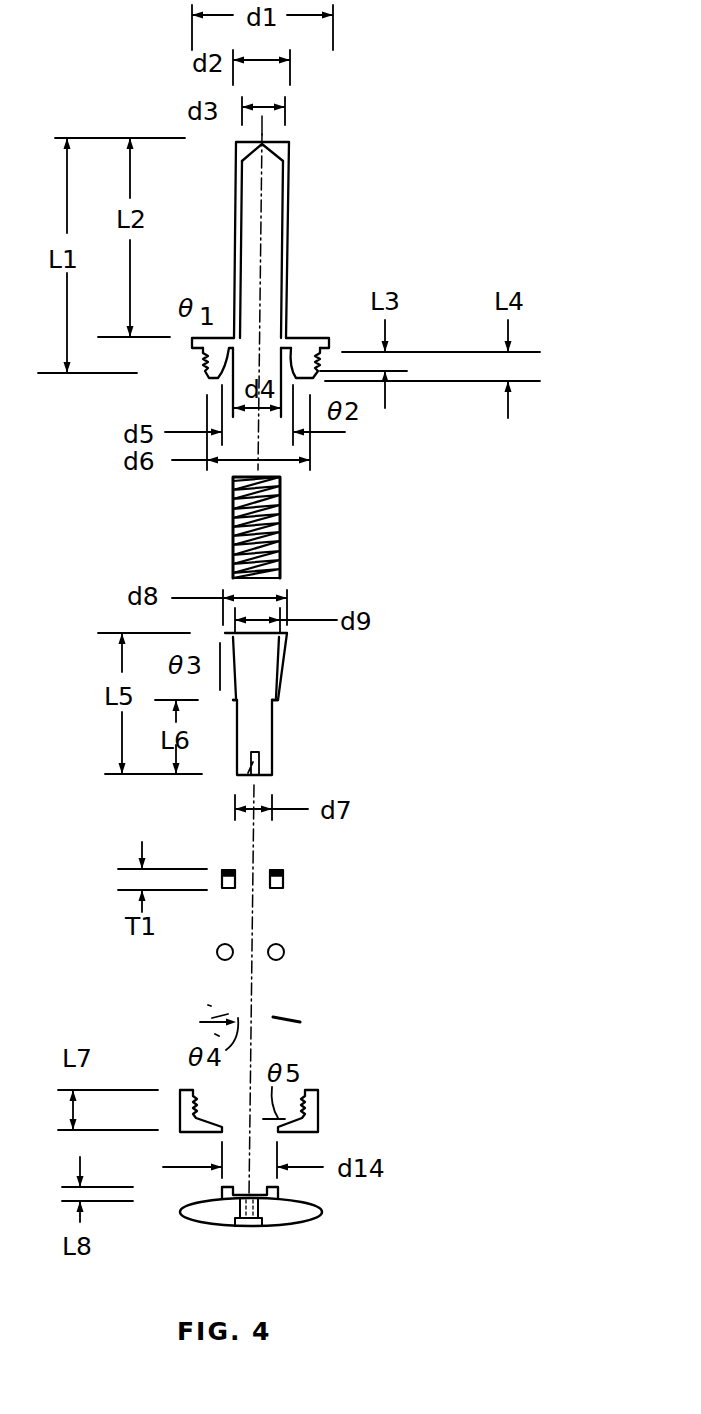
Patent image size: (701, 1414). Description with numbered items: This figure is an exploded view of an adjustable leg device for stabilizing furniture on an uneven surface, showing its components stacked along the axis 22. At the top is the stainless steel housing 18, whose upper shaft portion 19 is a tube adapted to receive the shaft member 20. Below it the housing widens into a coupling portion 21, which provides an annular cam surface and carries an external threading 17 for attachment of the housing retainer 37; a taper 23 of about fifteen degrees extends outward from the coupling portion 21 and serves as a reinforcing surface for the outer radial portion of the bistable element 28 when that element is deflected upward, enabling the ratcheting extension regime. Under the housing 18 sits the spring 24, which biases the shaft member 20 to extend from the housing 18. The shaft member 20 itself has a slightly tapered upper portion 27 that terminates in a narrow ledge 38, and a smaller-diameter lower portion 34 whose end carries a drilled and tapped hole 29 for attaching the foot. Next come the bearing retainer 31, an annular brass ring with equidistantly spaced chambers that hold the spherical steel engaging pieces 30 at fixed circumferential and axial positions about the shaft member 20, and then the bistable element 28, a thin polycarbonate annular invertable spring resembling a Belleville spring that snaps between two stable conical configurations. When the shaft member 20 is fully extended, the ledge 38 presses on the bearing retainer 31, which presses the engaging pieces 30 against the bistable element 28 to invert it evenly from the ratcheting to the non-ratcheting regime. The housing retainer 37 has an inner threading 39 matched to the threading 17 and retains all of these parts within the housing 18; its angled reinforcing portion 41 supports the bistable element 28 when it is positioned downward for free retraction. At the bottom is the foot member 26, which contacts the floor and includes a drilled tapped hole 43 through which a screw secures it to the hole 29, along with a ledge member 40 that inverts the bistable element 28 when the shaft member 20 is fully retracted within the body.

The threading 17 is at (205, 362).
The housing 18 is at (376, 235).
The shaft portion of the housing 19 is at (288, 200).
The shaft member 20 is at (405, 658).
The coupling portion 21 is at (309, 330).
The axis 22 is at (272, 129).
The taper 23 is at (222, 380).
The spring 24 is at (279, 532).
The foot member 26 is at (306, 1224).
The upper portion of the shaft 27 is at (263, 663).
The bistable element 28 is at (285, 1016).
The drilled and tapped hole 29 is at (263, 757).
The engaging pieces 30 is at (284, 948).
The bearing retainer 31 is at (284, 878).
The lower portion of the shaft 34 is at (258, 727).
The housing retainer 37 is at (318, 1110).
The ledge 38 is at (273, 702).
The inner threading 39 is at (196, 1112).
The ledge member 40 is at (224, 1190).
The reinforcing portion 41 is at (193, 1134).
The drilled tapped hole 43 is at (283, 1191).